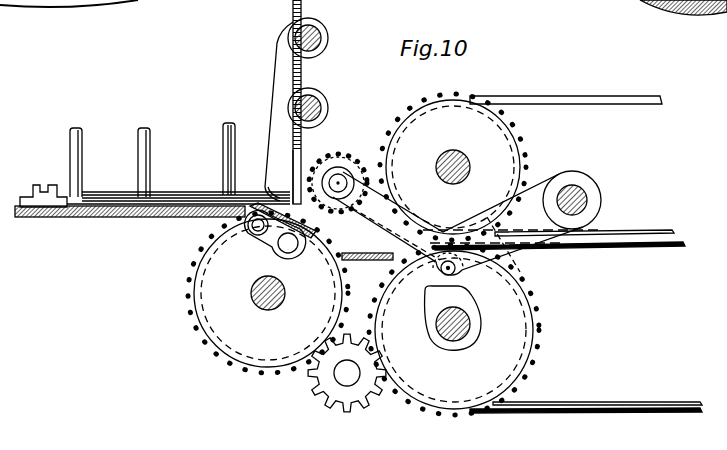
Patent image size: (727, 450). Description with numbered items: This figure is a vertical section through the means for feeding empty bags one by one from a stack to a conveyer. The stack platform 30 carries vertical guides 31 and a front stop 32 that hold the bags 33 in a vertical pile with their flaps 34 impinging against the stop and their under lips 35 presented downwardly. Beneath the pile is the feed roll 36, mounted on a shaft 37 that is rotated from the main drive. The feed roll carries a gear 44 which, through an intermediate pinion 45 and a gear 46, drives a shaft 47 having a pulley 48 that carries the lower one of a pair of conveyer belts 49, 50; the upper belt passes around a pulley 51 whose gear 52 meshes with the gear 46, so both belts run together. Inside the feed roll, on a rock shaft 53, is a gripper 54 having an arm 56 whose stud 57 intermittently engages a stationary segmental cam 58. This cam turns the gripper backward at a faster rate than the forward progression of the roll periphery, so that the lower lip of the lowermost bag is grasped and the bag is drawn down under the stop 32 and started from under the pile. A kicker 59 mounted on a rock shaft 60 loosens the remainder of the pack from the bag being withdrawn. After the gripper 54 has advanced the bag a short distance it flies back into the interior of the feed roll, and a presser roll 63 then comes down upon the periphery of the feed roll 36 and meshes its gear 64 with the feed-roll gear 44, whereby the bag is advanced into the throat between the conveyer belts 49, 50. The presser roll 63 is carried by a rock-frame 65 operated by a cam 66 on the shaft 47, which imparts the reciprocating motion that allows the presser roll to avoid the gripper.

The stack platform 30 is at (120, 217).
The vertical guides 31 is at (70, 154).
The front stop 32 is at (293, 73).
The bags 33 is at (182, 193).
The flaps 34 is at (282, 185).
The under lips 35 is at (200, 240).
The feed roll 36 is at (252, 293).
The shaft 37 is at (257, 303).
The gear 44 is at (220, 367).
The intermediate pinion 45 is at (318, 393).
The gear 46 is at (413, 400).
The shaft 47 is at (457, 333).
The pulley 48 is at (520, 328).
The conveyer belt 49 is at (575, 247).
The conveyer belt 50 is at (597, 98).
The pulley 51 is at (497, 137).
The gear 52 is at (527, 153).
The rock shaft 53 is at (305, 243).
The gripper 54 is at (280, 200).
The arm 56 is at (287, 243).
The stud 57 is at (253, 233).
The stationary segmental cam 58 is at (313, 232).
The kicker 59 is at (297, 147).
The rock shaft 60 is at (320, 102).
The presser roll 63 is at (367, 173).
The gear 64 is at (353, 153).
The rock-frame 65 is at (585, 212).
The cam 66 is at (432, 302).